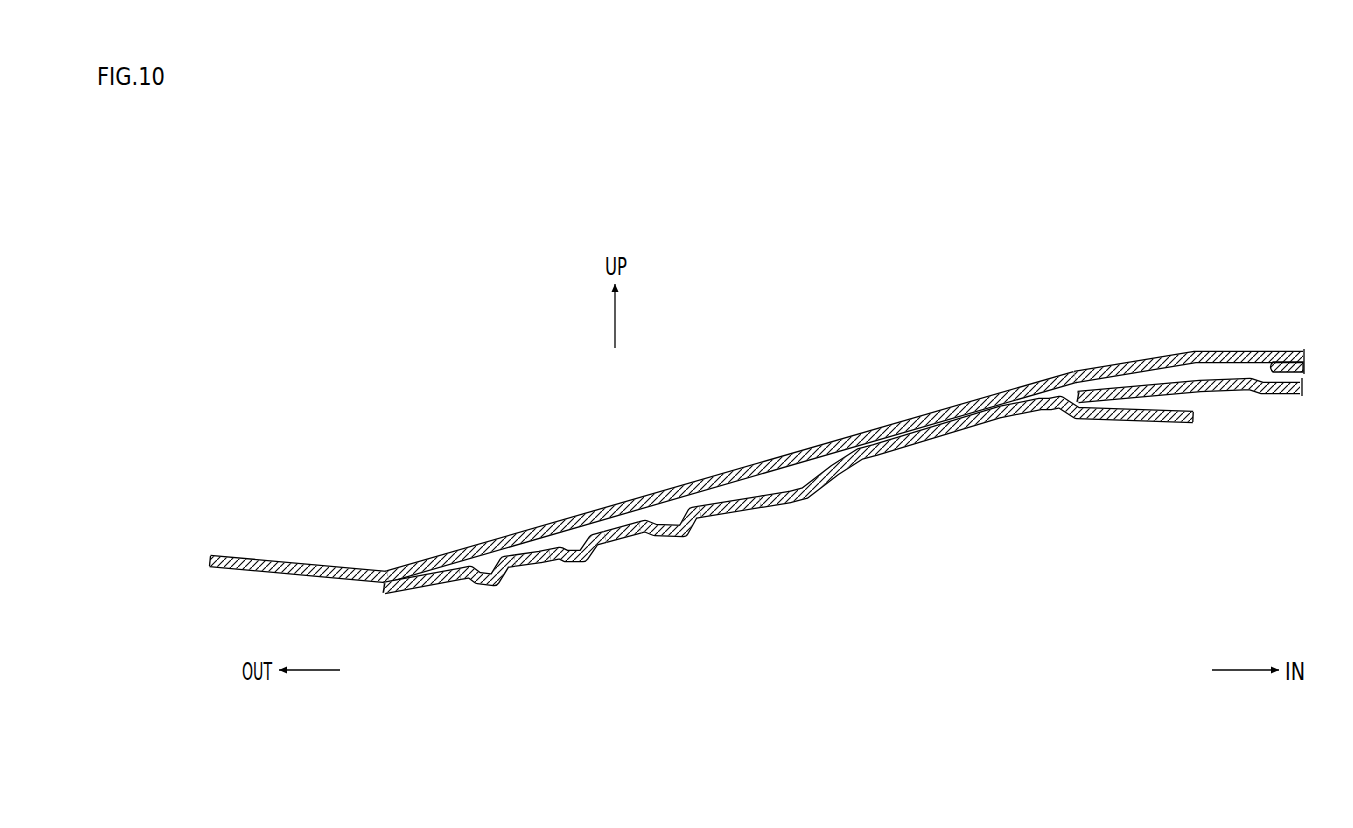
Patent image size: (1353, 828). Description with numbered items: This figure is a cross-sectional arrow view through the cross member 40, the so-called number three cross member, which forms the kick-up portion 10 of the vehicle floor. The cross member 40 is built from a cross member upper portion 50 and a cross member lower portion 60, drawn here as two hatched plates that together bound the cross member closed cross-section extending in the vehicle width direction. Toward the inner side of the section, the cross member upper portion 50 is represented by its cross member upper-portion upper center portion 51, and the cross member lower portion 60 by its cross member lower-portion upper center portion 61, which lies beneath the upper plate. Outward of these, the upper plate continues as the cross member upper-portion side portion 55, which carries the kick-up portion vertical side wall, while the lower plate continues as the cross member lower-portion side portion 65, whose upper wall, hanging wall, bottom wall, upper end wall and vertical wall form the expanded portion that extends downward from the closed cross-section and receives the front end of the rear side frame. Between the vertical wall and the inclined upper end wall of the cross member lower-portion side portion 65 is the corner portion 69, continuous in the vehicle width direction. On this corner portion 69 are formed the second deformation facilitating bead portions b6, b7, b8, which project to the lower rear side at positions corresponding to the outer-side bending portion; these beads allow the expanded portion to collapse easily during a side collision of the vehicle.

The kick-up portion 10 is at (759, 441).
The cross member 40 is at (761, 392).
The cross member upper portion 50 is at (1222, 349).
The cross member upper-portion upper center portion 51 is at (1287, 374).
The cross member upper-portion side portion 55 is at (1052, 378).
The cross member lower portion 60 is at (1239, 377).
The cross member lower-portion upper center portion 61 is at (1172, 392).
The cross member lower-portion side portion 65 is at (921, 446).
The corner portion 69 is at (726, 504).
The second deformation facilitating bead portion b6 is at (688, 532).
The second deformation facilitating bead portion b7 is at (596, 549).
The second deformation facilitating bead portion b8 is at (501, 573).